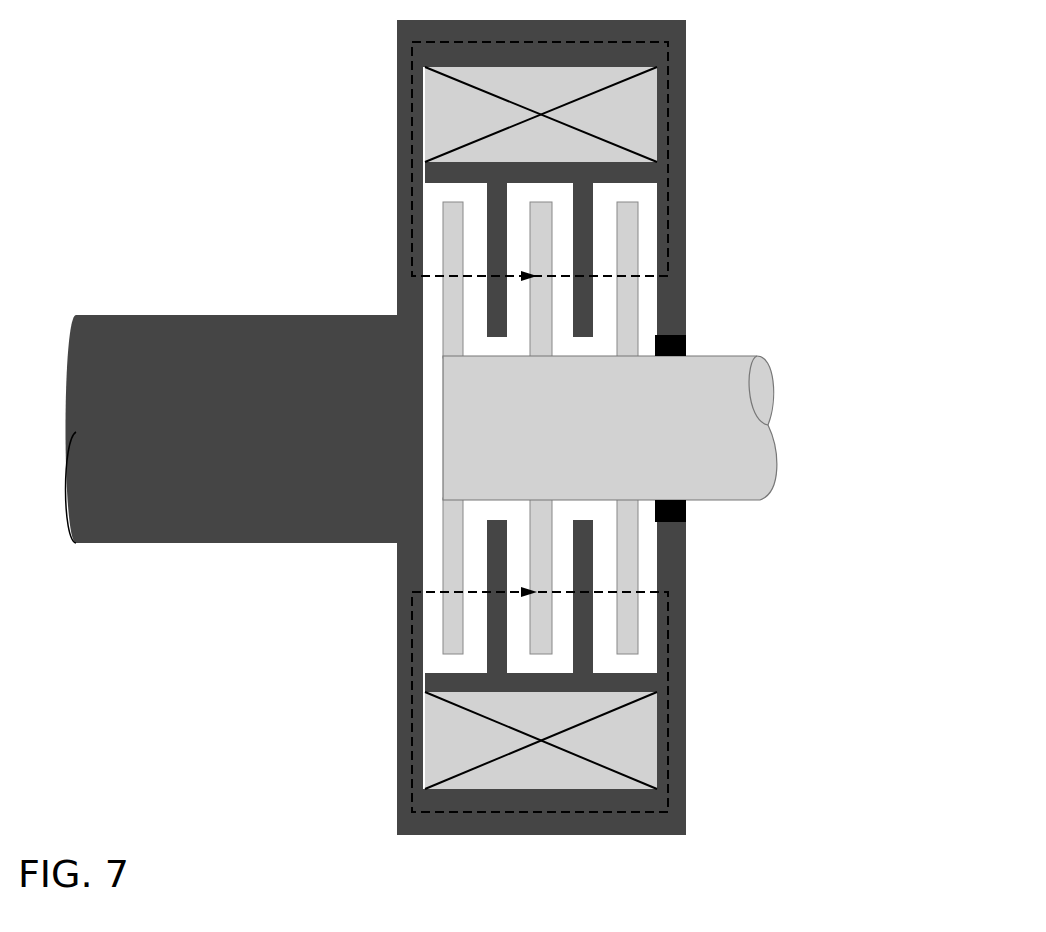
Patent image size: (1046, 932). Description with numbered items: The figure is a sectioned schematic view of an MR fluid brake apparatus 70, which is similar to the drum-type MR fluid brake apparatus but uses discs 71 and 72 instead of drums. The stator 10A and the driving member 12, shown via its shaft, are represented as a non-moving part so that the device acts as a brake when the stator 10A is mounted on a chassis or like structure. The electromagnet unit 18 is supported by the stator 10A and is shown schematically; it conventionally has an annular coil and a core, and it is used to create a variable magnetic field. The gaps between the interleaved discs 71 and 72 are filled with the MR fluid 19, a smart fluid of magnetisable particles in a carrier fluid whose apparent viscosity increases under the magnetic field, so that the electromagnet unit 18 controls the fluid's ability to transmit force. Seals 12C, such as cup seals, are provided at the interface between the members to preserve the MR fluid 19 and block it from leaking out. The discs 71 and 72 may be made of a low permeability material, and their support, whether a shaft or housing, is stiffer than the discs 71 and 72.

The MR fluid brake apparatus 70 is at (148, 144).
The disc 72 is at (440, 246).
The disc 71 is at (467, 638).
The stator 10A is at (232, 396).
The driving member 12 is at (675, 394).
The seal 12C is at (768, 463).
The electromagnet unit 18 is at (601, 412).
The MR fluid 19 is at (611, 427).